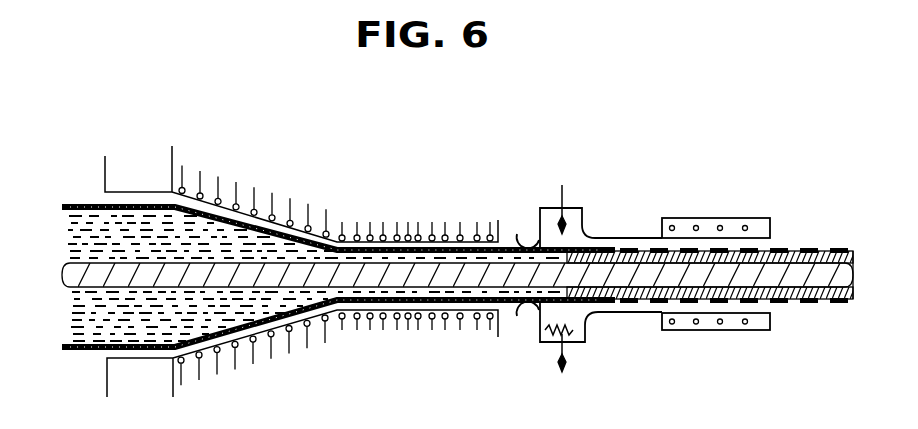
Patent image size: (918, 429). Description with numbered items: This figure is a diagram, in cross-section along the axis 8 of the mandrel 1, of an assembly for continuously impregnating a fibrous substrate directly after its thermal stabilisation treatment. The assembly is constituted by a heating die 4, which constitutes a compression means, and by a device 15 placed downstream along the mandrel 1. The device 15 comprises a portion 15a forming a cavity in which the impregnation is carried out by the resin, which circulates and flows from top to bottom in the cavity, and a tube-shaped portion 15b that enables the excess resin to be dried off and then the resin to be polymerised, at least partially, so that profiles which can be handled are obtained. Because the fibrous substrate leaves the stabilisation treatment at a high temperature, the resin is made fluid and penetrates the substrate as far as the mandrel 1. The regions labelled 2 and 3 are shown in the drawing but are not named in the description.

The mandrel 1 is at (90, 266).
The inner liquid layer 2 is at (85, 311).
The tube wall 3 is at (80, 350).
The heating die 4 is at (322, 218).
The axis 8 is at (60, 277).
The device 15 is at (610, 193).
The portion forming a cavity 15a is at (578, 344).
The tube-shaped portion 15b is at (716, 332).